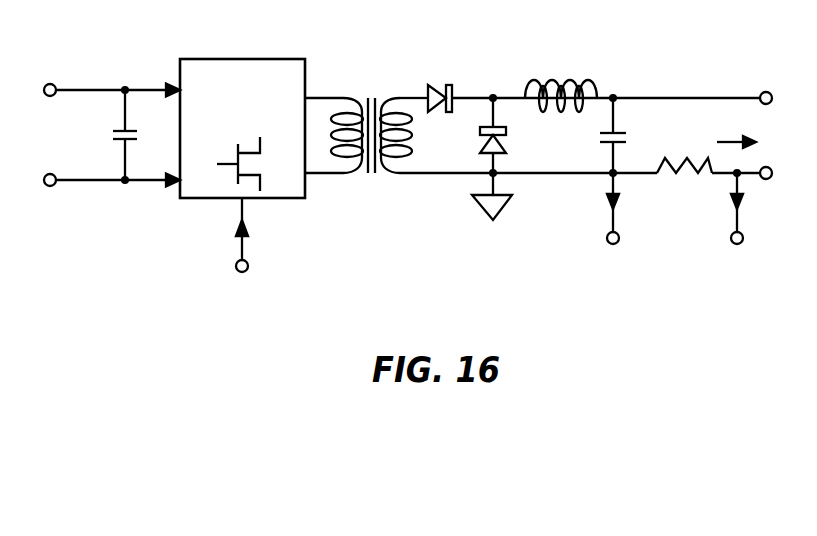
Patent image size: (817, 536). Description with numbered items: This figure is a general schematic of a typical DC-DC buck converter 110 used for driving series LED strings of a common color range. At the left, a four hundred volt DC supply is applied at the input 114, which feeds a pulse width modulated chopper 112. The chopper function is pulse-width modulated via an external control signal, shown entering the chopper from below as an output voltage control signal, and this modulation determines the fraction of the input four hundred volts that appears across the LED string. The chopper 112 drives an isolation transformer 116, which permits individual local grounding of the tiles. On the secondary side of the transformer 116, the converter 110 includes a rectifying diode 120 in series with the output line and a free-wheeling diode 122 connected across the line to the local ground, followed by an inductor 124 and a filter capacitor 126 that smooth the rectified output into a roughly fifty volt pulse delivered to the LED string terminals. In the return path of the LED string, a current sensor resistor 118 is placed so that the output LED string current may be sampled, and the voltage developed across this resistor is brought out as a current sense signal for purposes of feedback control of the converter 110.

The DC-DC buck converter 110 is at (145, 22).
The pulse width modulated chopper 112 is at (275, 198).
The input 114 is at (52, 96).
The isolation transformer 116 is at (372, 95).
The current sensor resistor 118 is at (664, 158).
The rectifying diode 120 is at (449, 84).
The free-wheeling diode 122 is at (480, 144).
The inductor 124 is at (550, 82).
The filter capacitor 126 is at (600, 137).